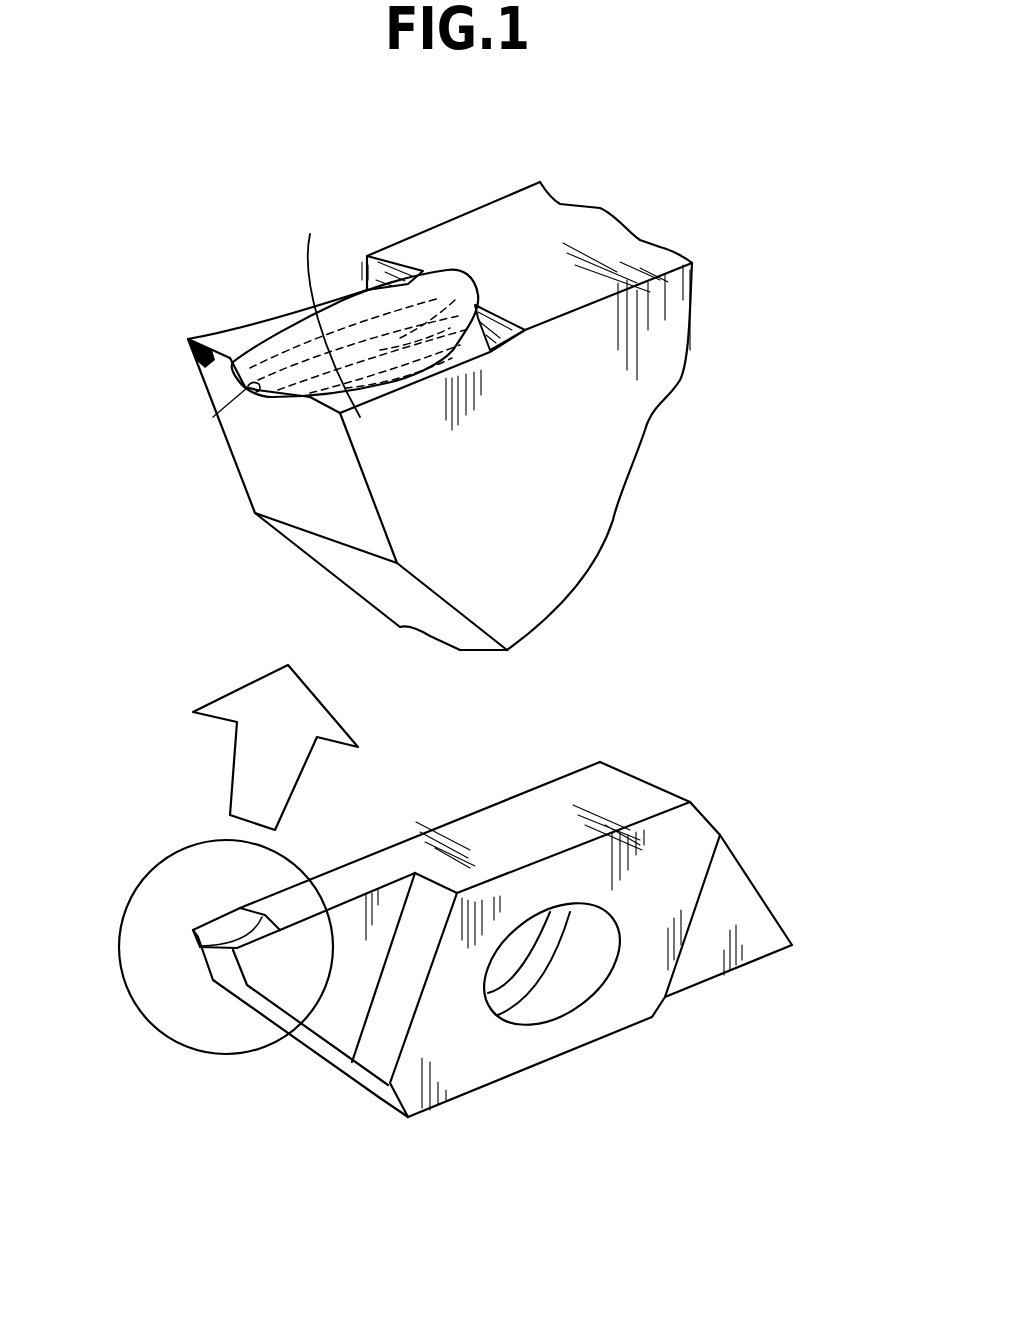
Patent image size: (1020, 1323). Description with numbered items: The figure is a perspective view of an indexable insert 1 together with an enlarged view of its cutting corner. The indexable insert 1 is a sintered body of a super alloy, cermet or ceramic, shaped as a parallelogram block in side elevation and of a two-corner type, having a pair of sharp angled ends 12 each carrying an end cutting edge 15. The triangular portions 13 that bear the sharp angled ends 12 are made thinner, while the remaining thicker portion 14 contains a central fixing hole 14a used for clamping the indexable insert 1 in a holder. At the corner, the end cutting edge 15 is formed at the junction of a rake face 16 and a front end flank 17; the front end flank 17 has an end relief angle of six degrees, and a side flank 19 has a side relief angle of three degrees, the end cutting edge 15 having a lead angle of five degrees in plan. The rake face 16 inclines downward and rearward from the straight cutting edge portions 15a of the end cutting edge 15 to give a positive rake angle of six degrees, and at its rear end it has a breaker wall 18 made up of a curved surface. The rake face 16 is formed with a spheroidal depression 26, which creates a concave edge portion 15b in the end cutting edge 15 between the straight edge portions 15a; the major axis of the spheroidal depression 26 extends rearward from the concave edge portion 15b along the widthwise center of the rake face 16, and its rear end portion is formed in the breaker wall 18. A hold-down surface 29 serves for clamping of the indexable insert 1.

The indexable insert 1 is at (657, 745).
The sharp angled end 12 is at (174, 306).
The triangular portion 13 is at (567, 460).
The thicker portion 14 is at (470, 1073).
The central fixing hole 14a is at (567, 985).
The end cutting edge 15 is at (190, 358).
The straight cutting edge portion 15a is at (185, 343).
The concave edge portion 15b is at (246, 389).
The rake face 16 is at (310, 320).
The front end flank 17 is at (283, 468).
The breaker wall 18 is at (365, 255).
The side flank 19 is at (432, 447).
The spheroidal depression 26 is at (230, 930).
The hold-down surface 29 is at (572, 221).